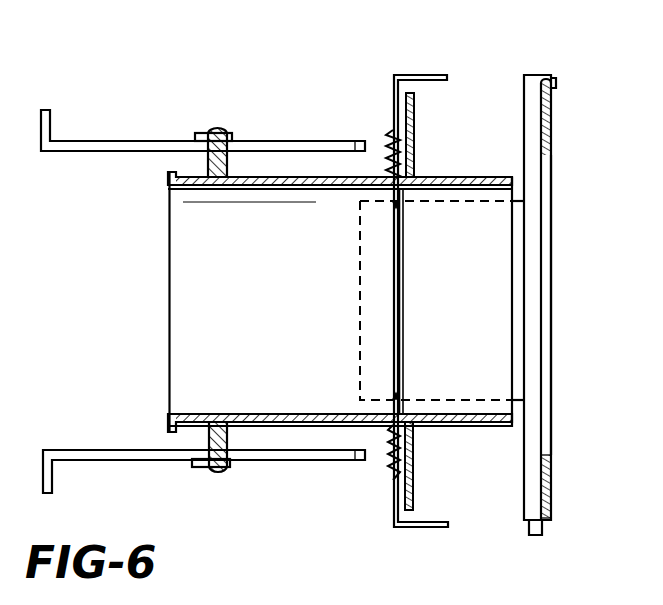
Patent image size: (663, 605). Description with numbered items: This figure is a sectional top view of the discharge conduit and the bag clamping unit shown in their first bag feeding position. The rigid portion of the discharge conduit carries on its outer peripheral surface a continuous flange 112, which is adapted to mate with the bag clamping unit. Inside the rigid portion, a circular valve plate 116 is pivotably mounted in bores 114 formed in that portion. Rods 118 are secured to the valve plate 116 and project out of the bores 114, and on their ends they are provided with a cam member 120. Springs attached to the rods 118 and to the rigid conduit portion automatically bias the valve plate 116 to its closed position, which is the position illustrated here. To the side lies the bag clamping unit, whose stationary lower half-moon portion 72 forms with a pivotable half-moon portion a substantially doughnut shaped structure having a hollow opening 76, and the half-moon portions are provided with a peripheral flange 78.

The cam member 120 is at (420, 75).
The continuous flange 112 is at (414, 128).
The bores 114 is at (392, 178).
The rods 118 is at (393, 483).
The circular valve plate 116 is at (396, 262).
The peripheral flange 78 is at (536, 42).
The hollow opening 76 is at (551, 232).
The stationary lower half-moon portion 72 is at (548, 488).